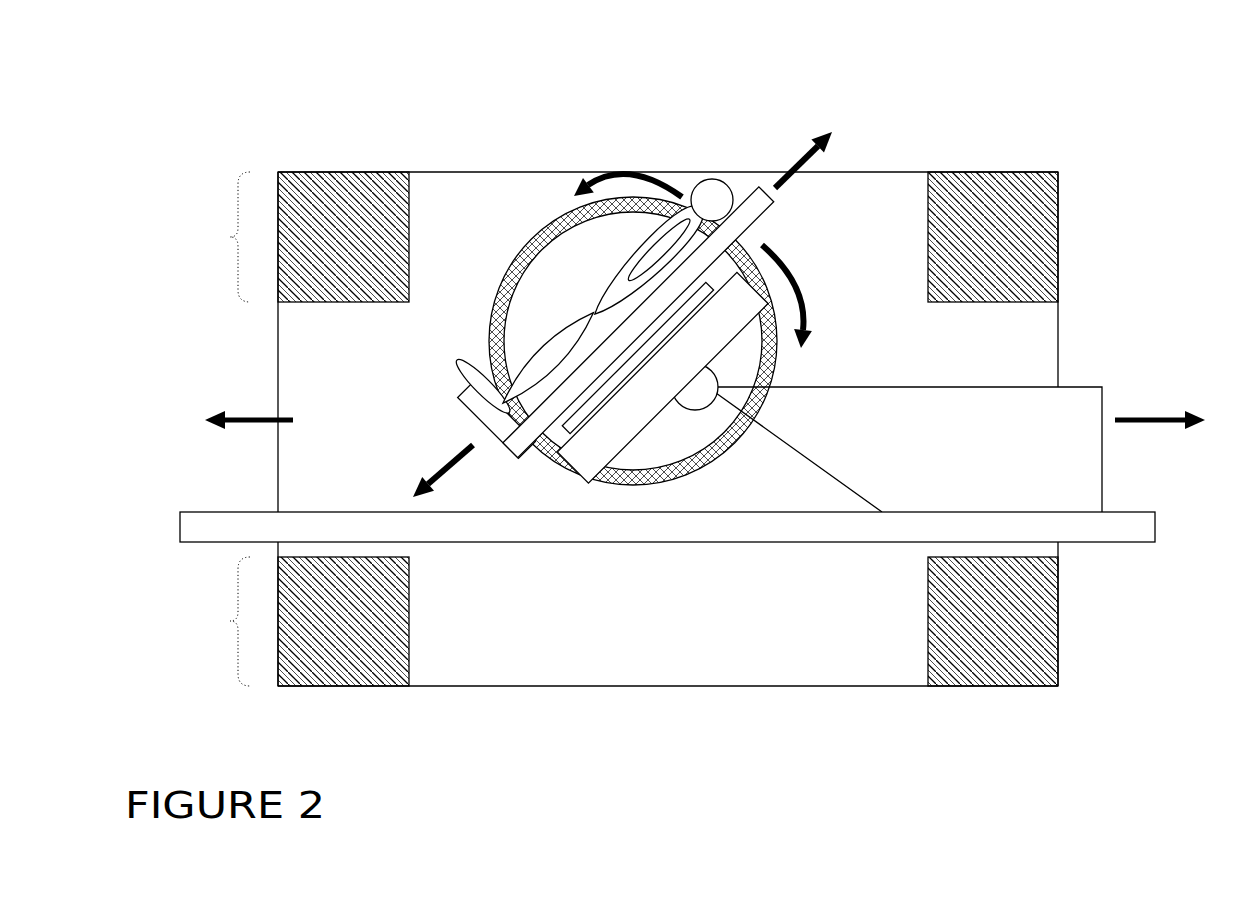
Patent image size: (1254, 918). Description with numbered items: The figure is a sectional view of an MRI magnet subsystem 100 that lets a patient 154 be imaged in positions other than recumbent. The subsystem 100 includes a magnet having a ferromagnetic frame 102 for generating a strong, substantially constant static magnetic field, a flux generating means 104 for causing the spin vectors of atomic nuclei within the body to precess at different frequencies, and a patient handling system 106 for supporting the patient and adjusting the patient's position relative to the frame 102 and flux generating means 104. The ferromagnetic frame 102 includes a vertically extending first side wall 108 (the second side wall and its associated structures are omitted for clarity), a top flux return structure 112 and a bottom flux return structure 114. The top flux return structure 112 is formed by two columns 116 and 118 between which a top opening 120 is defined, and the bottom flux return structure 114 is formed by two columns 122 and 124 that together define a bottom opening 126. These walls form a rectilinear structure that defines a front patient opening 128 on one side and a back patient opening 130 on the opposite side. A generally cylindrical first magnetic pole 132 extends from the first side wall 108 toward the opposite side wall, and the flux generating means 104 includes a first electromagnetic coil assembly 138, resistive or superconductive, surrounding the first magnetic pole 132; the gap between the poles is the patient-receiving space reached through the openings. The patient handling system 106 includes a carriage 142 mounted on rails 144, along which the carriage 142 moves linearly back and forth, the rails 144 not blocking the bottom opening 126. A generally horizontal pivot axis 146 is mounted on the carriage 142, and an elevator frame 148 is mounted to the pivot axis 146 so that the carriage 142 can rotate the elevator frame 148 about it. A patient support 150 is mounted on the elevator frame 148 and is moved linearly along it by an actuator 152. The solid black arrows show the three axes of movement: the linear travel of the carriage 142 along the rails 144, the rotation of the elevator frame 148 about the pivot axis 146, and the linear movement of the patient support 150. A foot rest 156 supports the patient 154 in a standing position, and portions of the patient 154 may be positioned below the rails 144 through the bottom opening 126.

The MRI magnet subsystem 100 is at (667, 832).
The ferromagnetic frame 102 is at (1078, 86).
The flux generating means 104 is at (617, 226).
The patient handling system 106 is at (456, 432).
The first side wall 108 is at (423, 168).
The top flux return structure 112 is at (225, 237).
The bottom flux return structure 114 is at (225, 621).
The column 116 is at (327, 213).
The column 118 is at (990, 213).
The top opening 120 is at (697, 118).
The column 122 is at (328, 632).
The column 124 is at (990, 632).
The bottom opening 126 is at (456, 720).
The front patient opening 128 is at (247, 372).
The back patient opening 130 is at (1096, 372).
The first magnetic pole 132 is at (583, 278).
The first electromagnetic coil assembly 138 is at (510, 270).
The carriage 142 is at (1110, 495).
The rails 144 is at (1112, 545).
The pivot axis 146 is at (692, 413).
The elevator frame 148 is at (648, 423).
The patient support 150 is at (537, 447).
The actuator 152 is at (587, 427).
The patient 154 is at (713, 198).
The foot rest 156 is at (495, 436).